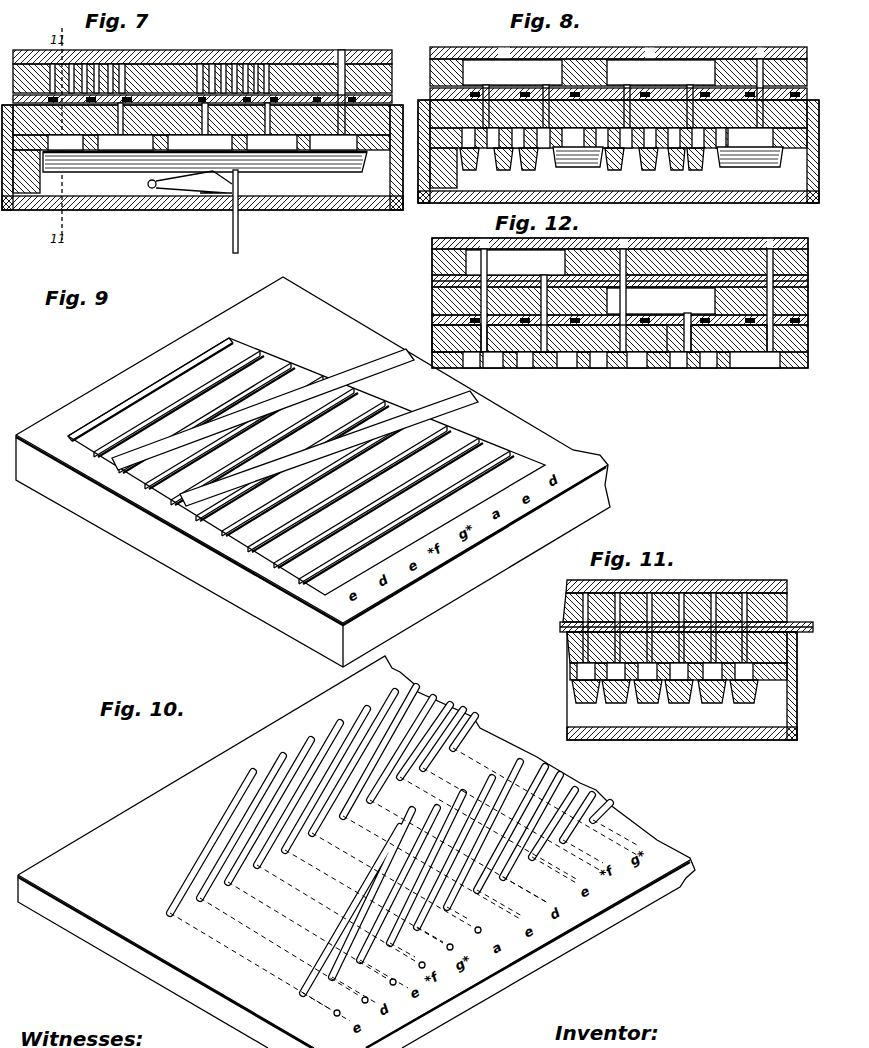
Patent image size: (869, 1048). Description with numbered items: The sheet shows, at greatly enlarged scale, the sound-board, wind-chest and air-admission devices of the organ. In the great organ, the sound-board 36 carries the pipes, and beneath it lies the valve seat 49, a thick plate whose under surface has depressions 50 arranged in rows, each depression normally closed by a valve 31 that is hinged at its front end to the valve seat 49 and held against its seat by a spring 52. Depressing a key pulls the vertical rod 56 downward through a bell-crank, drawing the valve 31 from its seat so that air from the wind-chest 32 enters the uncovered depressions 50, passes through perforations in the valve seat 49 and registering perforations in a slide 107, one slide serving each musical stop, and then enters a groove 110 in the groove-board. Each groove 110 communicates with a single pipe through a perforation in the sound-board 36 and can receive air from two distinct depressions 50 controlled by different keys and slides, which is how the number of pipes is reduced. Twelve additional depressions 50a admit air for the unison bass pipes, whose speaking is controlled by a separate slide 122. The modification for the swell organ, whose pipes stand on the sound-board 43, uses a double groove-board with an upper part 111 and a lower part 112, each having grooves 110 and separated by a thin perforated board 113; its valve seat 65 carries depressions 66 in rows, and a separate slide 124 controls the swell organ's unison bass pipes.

In FIG. 7, the sound-board 36 is at (190, 58).
In FIG. 8, the sound-board 36 is at (690, 53).
In FIG. 11, the sound-board 36 is at (745, 590).
In FIG. 7, the groove 110 is at (109, 66).
In FIG. 8, the groove 110 is at (589, 94).
In FIG. 12, the groove 110 is at (590, 282).
In FIG. 11, the groove 110 is at (618, 600).
In FIG. 10, the groove 110 is at (215, 852).
In FIG. 7, the slide 122 is at (348, 100).
In FIG. 8, the slide 122 is at (768, 95).
In FIG. 7, the slide 107 is at (202, 111).
In FIG. 8, the slide 107 is at (618, 107).
In FIG. 12, the slide 107 is at (577, 338).
In FIG. 11, the slide 107 is at (798, 627).
In FIG. 7, the valve seat 49 is at (201, 119).
In FIG. 8, the valve seat 49 is at (618, 114).
In FIG. 9, the valve seat 49 is at (313, 472).
In FIG. 11, the valve seat 49 is at (572, 650).
In FIG. 7, the depression 50 is at (172, 144).
In FIG. 8, the depression 50 is at (470, 138).
In FIG. 9, the depression 50 is at (222, 482).
In FIG. 11, the depression 50 is at (650, 672).
In FIG. 7, the additional depression 50a is at (333, 144).
In FIG. 8, the additional depression 50a is at (750, 139).
In FIG. 9, the additional depression 50a is at (190, 368).
In FIG. 7, the valve 31 is at (205, 162).
In FIG. 8, the valve 31 is at (512, 171).
In FIG. 11, the valve 31 is at (590, 704).
In FIG. 7, the spring 52 is at (148, 185).
In FIG. 7, the wind-chest 32 is at (316, 200).
In FIG. 8, the wind-chest 32 is at (790, 198).
In FIG. 11, the wind-chest 32 is at (738, 740).
In FIG. 7, the vertical rod 56 is at (233, 242).
In FIG. 12, the sound-board 43 is at (735, 241).
In FIG. 12, the upper part of groove-board 111 is at (436, 258).
In FIG. 12, the perforated board 113 is at (436, 281).
In FIG. 12, the lower part of groove-board 112 is at (440, 300).
In FIG. 12, the valve seat 65 is at (456, 338).
In FIG. 12, the slide 124 is at (729, 338).
In FIG. 12, the depression 66 is at (495, 369).